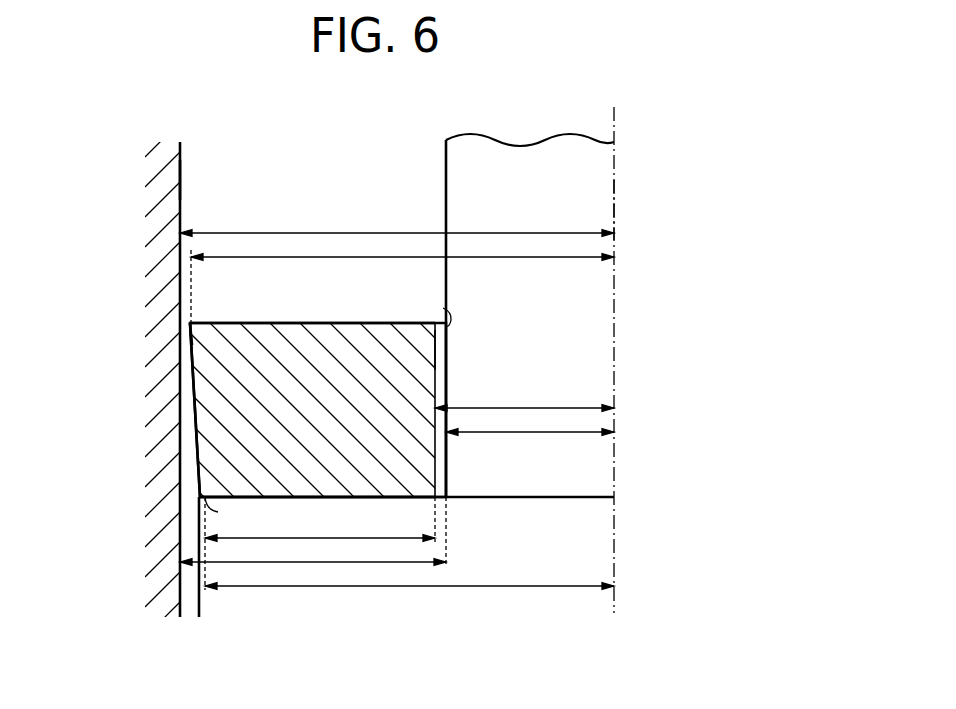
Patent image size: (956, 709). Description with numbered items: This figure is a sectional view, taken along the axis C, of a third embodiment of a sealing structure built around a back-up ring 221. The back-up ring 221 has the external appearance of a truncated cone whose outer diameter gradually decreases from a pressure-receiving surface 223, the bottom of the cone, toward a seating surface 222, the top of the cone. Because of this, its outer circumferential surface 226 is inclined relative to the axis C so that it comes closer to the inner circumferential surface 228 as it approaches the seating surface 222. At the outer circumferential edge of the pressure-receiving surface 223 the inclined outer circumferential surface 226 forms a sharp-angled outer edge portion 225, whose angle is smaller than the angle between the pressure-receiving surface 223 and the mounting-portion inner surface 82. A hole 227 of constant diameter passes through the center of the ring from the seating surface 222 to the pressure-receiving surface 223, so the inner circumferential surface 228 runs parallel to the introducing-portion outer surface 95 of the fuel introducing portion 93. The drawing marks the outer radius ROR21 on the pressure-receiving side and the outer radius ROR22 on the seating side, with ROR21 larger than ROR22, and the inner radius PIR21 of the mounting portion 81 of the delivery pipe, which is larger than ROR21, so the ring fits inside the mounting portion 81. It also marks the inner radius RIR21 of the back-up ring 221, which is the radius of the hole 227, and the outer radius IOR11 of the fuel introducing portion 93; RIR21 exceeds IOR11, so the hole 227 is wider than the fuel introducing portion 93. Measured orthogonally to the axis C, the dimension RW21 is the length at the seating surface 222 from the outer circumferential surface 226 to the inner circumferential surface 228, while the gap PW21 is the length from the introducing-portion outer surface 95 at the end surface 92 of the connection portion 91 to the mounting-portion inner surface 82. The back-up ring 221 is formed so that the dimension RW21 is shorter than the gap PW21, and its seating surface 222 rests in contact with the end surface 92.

The mounting portion 81 is at (181, 152).
The mounting-portion inner surface 82 is at (181, 177).
The introducing-portion outer surface 95 is at (446, 206).
The fuel introducing portion 93 is at (600, 215).
The axis C is at (618, 118).
The connection portion 91 is at (598, 542).
The end surface 92 is at (243, 495).
The back-up ring 221 is at (220, 418).
The seating surface 222 is at (200, 513).
The pressure-receiving surface 223 is at (278, 322).
The outer edge portion 225 is at (190, 333).
The outer circumferential surface 226 is at (192, 387).
The hole 227 is at (445, 314).
The inner circumferential surface 228 is at (448, 352).
The inner radius of the mounting portion PIR21 is at (363, 233).
The outer radius of the back-up ring on the pressure-receiving surface side ROR21 is at (290, 257).
The inner radius of the back-up ring RIR21 is at (522, 407).
The outer radius of the fuel introducing portion IOR11 is at (523, 433).
The dimension RW21 is at (283, 538).
The gap PW21 is at (372, 563).
The outer radius of the back-up ring on the seating surface side ROR22 is at (447, 587).